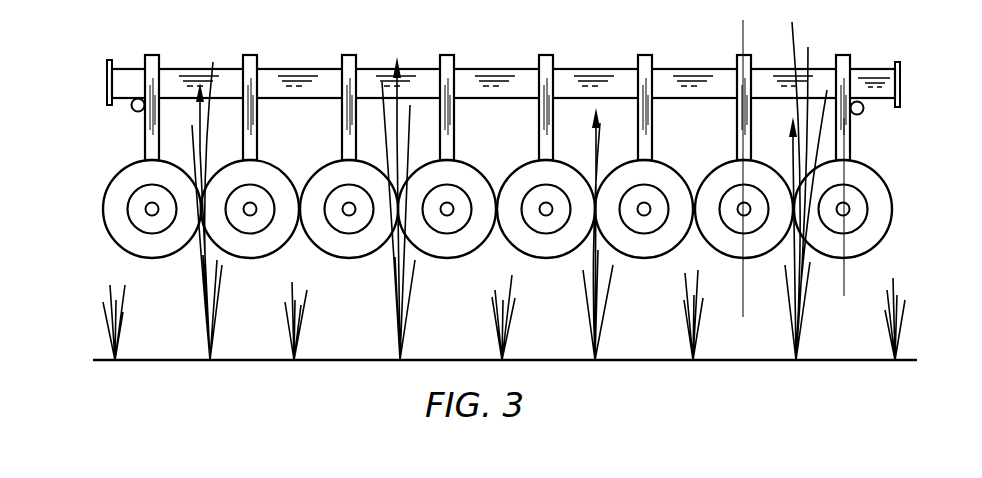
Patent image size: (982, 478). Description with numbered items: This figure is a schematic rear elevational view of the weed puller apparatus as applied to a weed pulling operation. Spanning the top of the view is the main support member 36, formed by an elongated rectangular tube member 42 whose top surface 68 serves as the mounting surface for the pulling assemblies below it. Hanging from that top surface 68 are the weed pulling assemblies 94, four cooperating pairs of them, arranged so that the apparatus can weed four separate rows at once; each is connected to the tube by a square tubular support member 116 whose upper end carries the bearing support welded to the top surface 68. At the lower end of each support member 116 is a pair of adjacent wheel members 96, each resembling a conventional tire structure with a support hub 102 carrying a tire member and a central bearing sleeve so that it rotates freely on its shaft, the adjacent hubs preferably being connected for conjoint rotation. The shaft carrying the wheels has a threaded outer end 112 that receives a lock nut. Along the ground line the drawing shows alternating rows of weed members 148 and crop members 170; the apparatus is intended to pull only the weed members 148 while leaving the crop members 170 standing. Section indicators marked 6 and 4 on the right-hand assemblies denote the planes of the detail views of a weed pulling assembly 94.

The main support member 36 is at (667, 77).
The elongated rectangular tube member 42 is at (480, 68).
The top surface 68 is at (288, 68).
The weed pulling assembly 94 is at (337, 130).
The wheel member 96 is at (155, 258).
The support hub 102 is at (637, 224).
The outer end 112 is at (647, 213).
The square tubular support member 116 is at (547, 87).
The weed member 148 is at (213, 335).
The crop member 170 is at (122, 335).
The section line 6 is at (748, 27).
The section line 4 is at (845, 120).